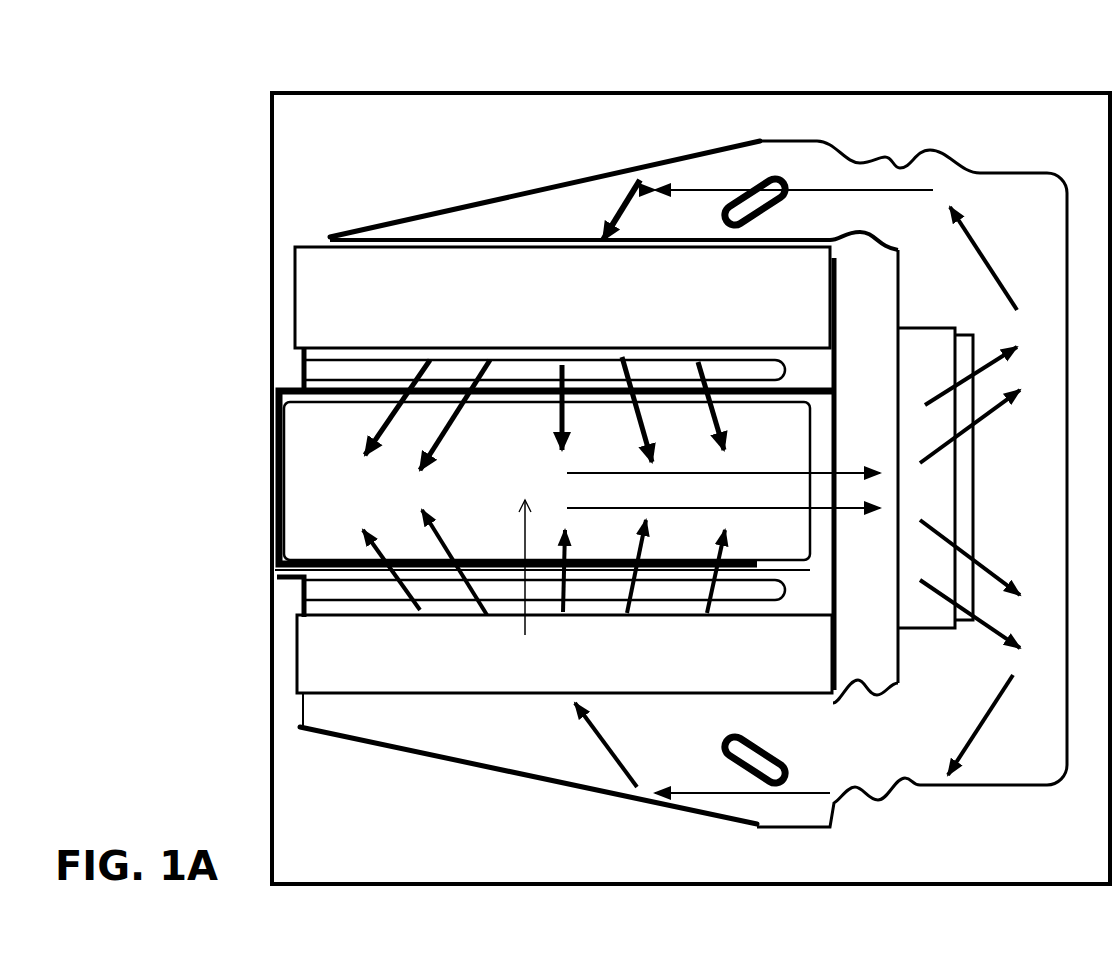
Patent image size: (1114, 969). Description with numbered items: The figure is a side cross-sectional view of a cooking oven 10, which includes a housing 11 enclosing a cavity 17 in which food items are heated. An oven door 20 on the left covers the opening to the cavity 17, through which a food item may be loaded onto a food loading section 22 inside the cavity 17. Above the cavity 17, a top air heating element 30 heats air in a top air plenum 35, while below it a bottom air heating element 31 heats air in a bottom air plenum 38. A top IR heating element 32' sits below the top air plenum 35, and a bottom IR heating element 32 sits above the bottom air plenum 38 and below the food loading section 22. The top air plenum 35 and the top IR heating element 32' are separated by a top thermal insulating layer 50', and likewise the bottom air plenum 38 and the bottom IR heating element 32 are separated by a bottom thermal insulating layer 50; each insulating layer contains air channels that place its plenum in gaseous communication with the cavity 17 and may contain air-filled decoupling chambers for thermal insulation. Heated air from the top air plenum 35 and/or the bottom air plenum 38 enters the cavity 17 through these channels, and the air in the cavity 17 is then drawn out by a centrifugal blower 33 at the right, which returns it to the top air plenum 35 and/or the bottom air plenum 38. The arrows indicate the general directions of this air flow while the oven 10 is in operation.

The oven 10 is at (233, 140).
The housing 11 is at (840, 128).
The cavity 17 is at (528, 590).
The oven door 20 is at (270, 540).
The food loading section 22 is at (352, 556).
The top air heating element 30 is at (750, 205).
The bottom air heating element 31 is at (750, 755).
The bottom IR heating element 32 is at (490, 674).
The top IR heating element 32' is at (491, 310).
The centrifugal blower 33 is at (925, 365).
The top air plenum 35 is at (558, 213).
The bottom air plenum 38 is at (545, 717).
The bottom thermal insulating layer 50 is at (564, 725).
The top thermal insulating layer 50' is at (562, 239).